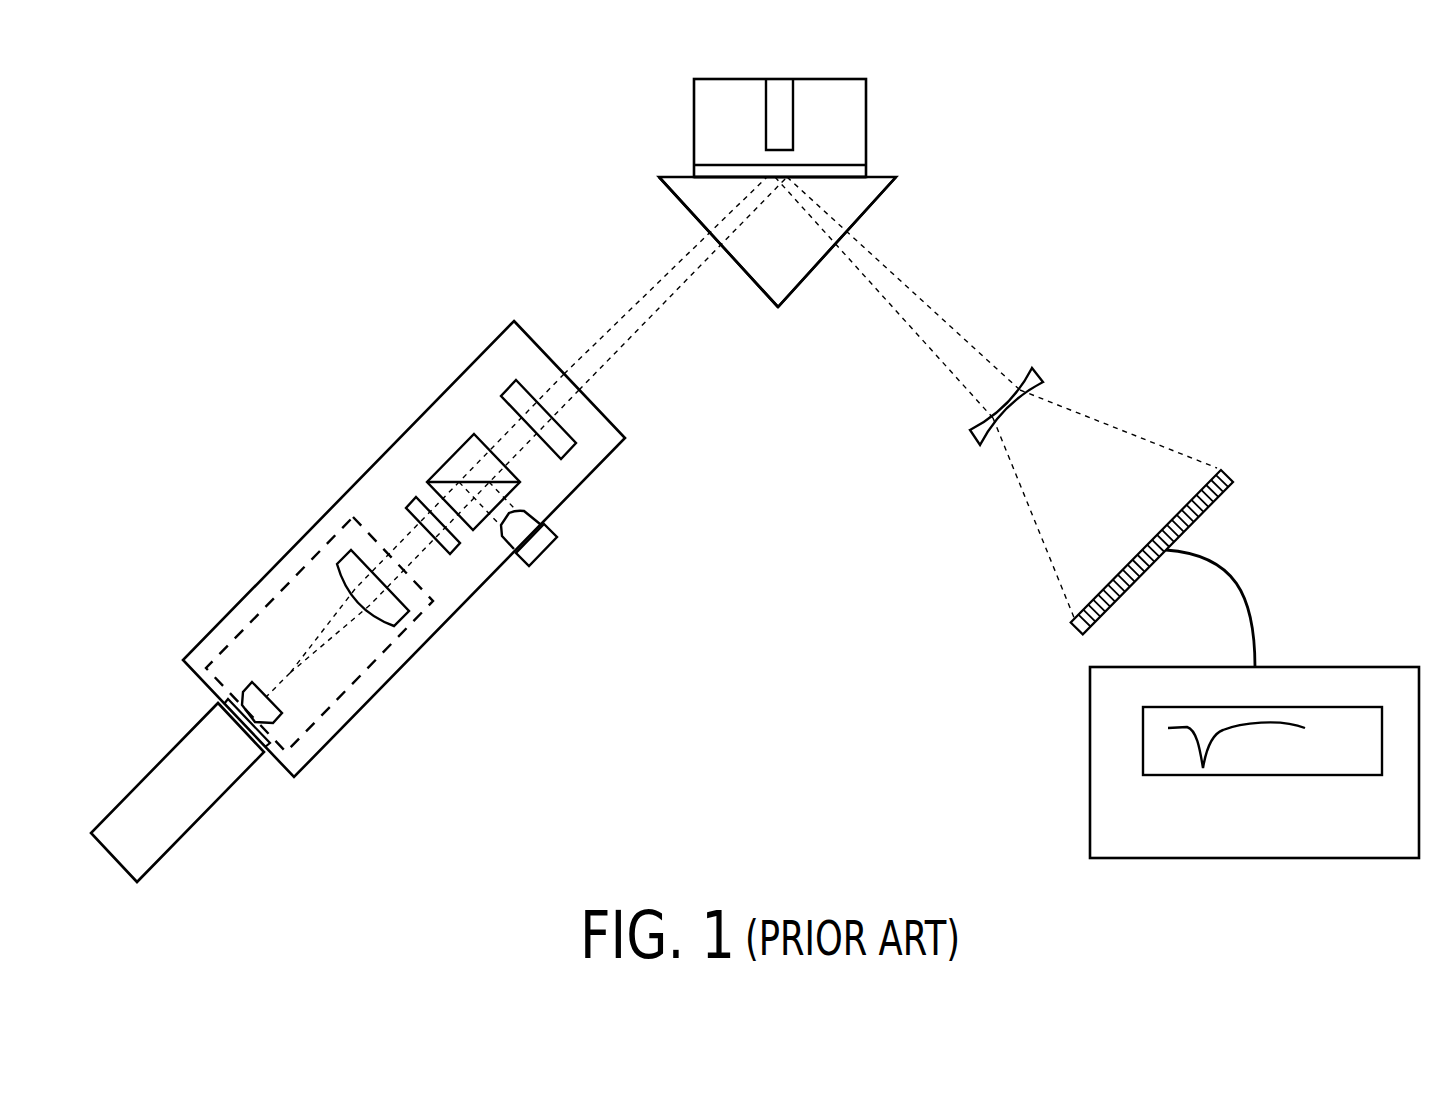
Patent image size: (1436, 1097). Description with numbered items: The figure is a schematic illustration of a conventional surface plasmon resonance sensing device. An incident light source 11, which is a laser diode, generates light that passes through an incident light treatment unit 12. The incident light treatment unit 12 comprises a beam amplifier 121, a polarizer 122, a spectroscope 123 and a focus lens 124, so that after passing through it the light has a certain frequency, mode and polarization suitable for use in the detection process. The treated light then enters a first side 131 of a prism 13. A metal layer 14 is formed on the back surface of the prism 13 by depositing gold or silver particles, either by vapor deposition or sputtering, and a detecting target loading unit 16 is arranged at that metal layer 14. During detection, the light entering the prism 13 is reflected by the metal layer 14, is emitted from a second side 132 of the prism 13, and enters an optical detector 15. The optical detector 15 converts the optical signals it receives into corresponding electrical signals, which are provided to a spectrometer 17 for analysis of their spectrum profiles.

The incident light source 11 is at (153, 845).
The incident light treatment unit 12 is at (343, 492).
The beam amplifier 121 is at (348, 692).
The polarizer 122 is at (462, 563).
The spectroscope 123 is at (457, 463).
The focus lens 124 is at (572, 448).
The prism 13 is at (795, 278).
The first side 131 is at (682, 203).
The second side 132 is at (862, 217).
The metal layer 14 is at (695, 170).
The optical detector 15 is at (1225, 487).
The detecting target loading unit 16 is at (703, 98).
The spectrometer 17 is at (1090, 797).